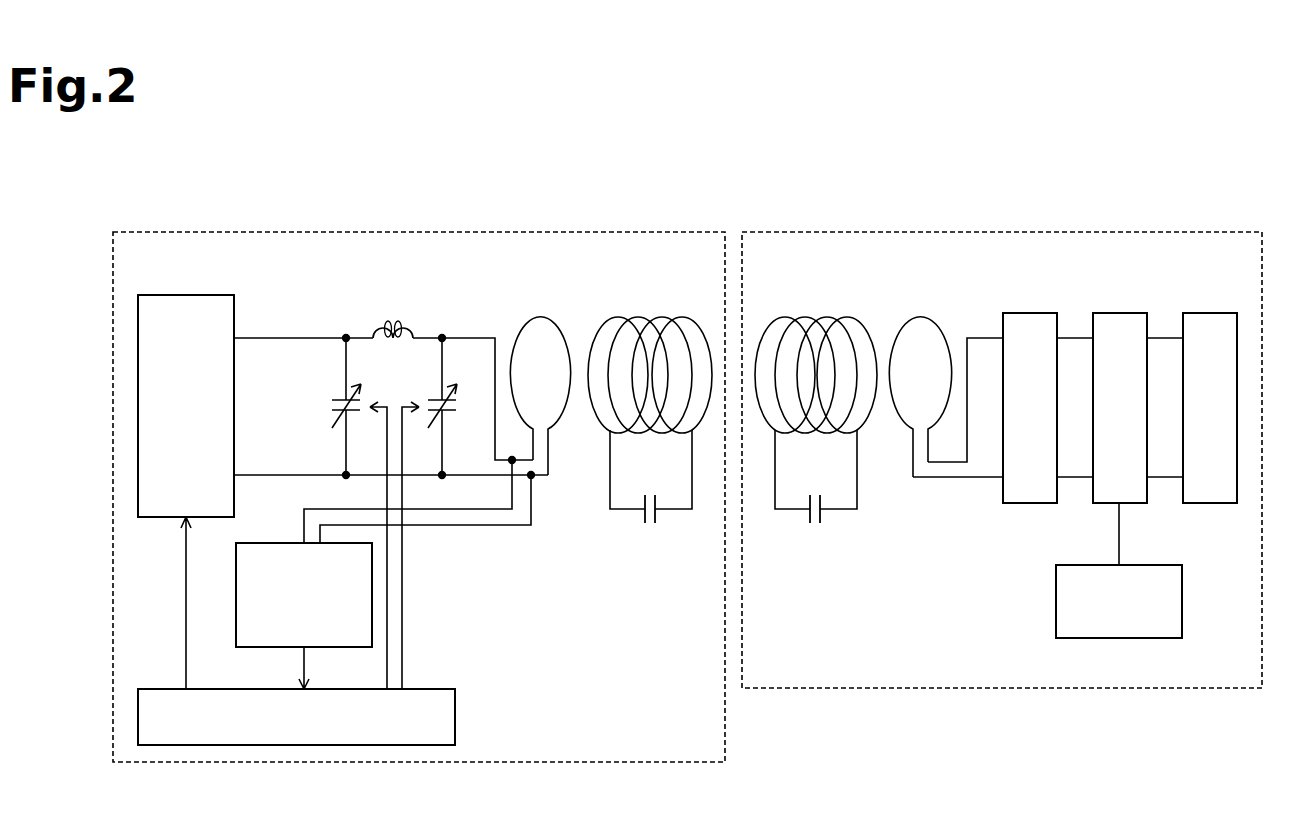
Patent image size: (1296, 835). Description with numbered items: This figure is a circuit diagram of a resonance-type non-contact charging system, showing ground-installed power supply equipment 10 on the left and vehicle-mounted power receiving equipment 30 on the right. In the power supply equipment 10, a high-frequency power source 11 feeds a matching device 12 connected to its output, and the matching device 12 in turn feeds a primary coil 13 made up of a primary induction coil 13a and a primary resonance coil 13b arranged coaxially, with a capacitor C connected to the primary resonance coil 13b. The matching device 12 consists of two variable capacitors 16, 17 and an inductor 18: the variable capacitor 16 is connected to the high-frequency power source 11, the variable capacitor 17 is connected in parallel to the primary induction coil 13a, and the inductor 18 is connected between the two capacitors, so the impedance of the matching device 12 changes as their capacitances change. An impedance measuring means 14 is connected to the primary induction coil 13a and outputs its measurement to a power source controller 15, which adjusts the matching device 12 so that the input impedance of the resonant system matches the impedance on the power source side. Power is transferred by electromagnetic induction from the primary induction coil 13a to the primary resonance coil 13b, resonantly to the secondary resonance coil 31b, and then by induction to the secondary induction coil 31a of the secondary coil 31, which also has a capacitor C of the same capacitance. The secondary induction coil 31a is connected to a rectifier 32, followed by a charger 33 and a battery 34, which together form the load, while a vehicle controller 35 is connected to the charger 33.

The power supply equipment 10 is at (393, 224).
The high-frequency power source 11 is at (184, 295).
The matching device 12 is at (462, 316).
The primary coil 13 is at (647, 272).
The primary induction coil 13a is at (559, 318).
The primary resonance coil 13b is at (621, 318).
The impedance measuring means 14 is at (236, 635).
The power source controller 15 is at (432, 689).
The variable capacitor 16 is at (354, 414).
The variable capacitor 17 is at (450, 414).
The inductor 18 is at (391, 318).
The power receiving equipment 30 is at (815, 222).
The secondary coil 31 is at (925, 272).
The secondary induction coil 31a is at (905, 318).
The secondary resonance coil 31b is at (850, 318).
The rectifier 32 is at (1036, 313).
The charger 33 is at (1122, 313).
The battery 34 is at (1211, 313).
The vehicle controller 35 is at (1056, 600).
The capacitor C is at (646, 524).